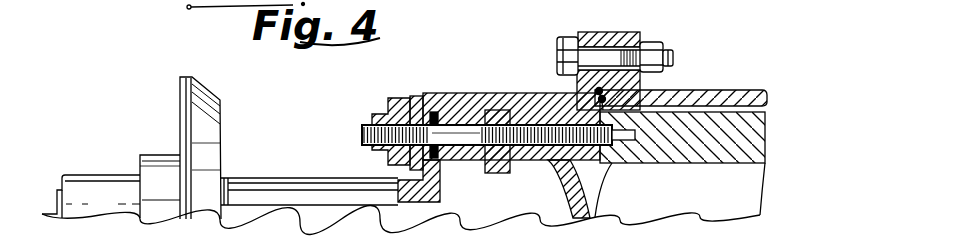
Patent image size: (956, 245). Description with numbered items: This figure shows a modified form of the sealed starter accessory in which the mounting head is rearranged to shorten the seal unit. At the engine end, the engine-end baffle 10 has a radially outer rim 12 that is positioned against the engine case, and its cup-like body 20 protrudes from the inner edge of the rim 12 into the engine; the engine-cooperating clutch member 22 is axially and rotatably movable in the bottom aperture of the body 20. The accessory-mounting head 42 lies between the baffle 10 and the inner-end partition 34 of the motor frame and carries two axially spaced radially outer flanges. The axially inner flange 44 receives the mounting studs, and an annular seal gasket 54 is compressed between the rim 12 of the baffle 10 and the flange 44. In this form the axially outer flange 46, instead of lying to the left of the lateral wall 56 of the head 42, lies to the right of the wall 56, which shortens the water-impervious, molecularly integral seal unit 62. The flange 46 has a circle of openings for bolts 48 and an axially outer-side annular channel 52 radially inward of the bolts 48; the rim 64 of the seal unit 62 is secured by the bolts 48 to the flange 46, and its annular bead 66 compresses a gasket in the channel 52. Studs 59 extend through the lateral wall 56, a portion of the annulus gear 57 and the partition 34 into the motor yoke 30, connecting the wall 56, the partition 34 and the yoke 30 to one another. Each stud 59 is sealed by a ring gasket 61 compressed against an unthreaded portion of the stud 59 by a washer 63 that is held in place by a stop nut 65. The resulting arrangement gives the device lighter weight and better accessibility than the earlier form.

The engine-end baffle 10 is at (85, 158).
The rim 12 is at (180, 97).
The cup-like body 20 is at (115, 203).
The clutch member 22 is at (33, 0).
The motor yoke 30 is at (712, 156).
The inner-end partition 34 is at (561, 191).
The accessory-mounting head 42 is at (262, 178).
The axially inner flange 44 is at (206, 97).
The axially outer flange 46 is at (596, 35).
The bolts 48 is at (560, 52).
The annular channel 52 is at (578, 88).
The annular seal gasket 54 is at (611, 146).
The lateral wall 56 is at (459, 160).
The annulus gear 57 is at (497, 175).
The studs 59 is at (448, 130).
The ring gaskets 61 is at (433, 112).
The seal unit 62 is at (735, 98).
The washers 63 is at (413, 97).
The rim 64 is at (636, 35).
The stop nuts 65 is at (388, 102).
The annular bead 66 is at (645, 88).